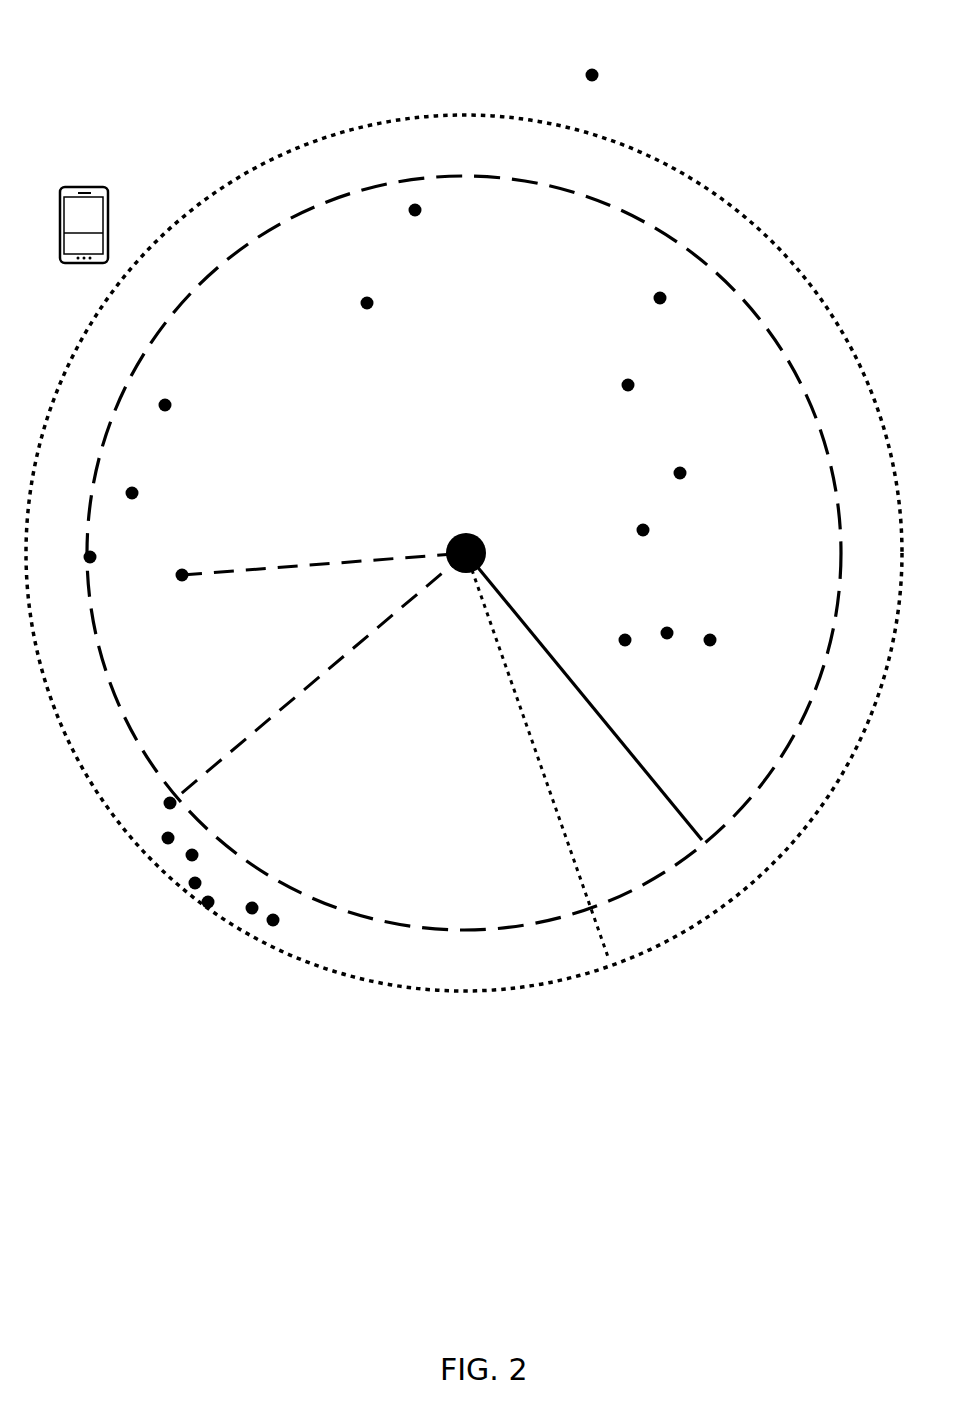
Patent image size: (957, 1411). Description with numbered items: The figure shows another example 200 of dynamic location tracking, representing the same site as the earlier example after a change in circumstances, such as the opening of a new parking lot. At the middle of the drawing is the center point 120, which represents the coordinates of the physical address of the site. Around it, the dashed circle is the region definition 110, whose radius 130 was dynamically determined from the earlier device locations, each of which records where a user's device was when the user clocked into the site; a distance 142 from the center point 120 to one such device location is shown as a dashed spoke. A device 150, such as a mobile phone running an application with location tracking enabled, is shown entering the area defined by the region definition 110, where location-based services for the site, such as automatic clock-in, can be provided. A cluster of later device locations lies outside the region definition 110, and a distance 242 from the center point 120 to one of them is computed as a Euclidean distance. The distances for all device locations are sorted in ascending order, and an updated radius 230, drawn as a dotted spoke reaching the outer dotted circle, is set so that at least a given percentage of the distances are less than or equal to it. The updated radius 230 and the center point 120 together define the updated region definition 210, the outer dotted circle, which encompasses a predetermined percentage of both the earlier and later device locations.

The example of dynamic location tracking 200 is at (148, 69).
The region definition 110 is at (648, 226).
The center point 120 is at (458, 568).
The radius 130 is at (603, 720).
The distance 142 is at (298, 569).
The device 150 is at (213, 311).
The updated region definition 210 is at (647, 155).
The updated radius 230 is at (555, 803).
The distance 242 is at (253, 733).